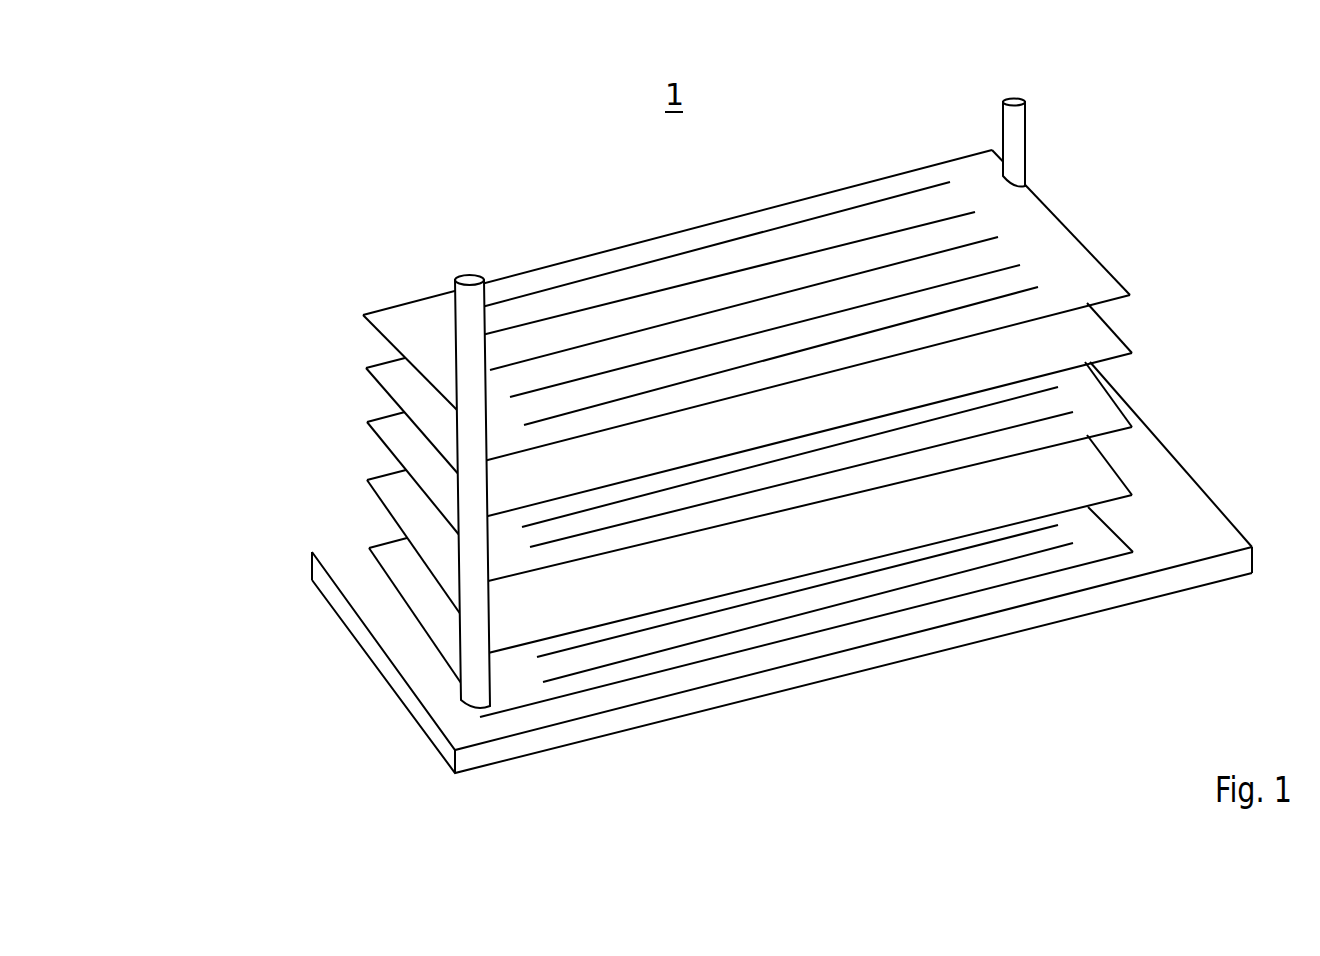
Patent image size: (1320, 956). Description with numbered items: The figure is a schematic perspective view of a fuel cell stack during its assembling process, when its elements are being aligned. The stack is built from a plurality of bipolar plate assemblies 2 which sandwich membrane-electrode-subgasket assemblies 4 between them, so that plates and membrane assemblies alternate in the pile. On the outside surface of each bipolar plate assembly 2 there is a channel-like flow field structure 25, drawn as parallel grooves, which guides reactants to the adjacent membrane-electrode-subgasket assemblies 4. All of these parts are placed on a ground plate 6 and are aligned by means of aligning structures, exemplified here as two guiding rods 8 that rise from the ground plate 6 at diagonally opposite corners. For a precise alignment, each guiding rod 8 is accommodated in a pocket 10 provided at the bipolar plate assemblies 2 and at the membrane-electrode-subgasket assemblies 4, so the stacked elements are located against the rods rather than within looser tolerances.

The bipolar plate assembly 2 is at (1097, 280).
The membrane-electrode-subgasket assembly 4 is at (1088, 345).
The ground plate 6 is at (427, 725).
The guiding rod 8 is at (1015, 127).
The pocket 10 is at (996, 170).
The flow field structure 25 is at (874, 236).